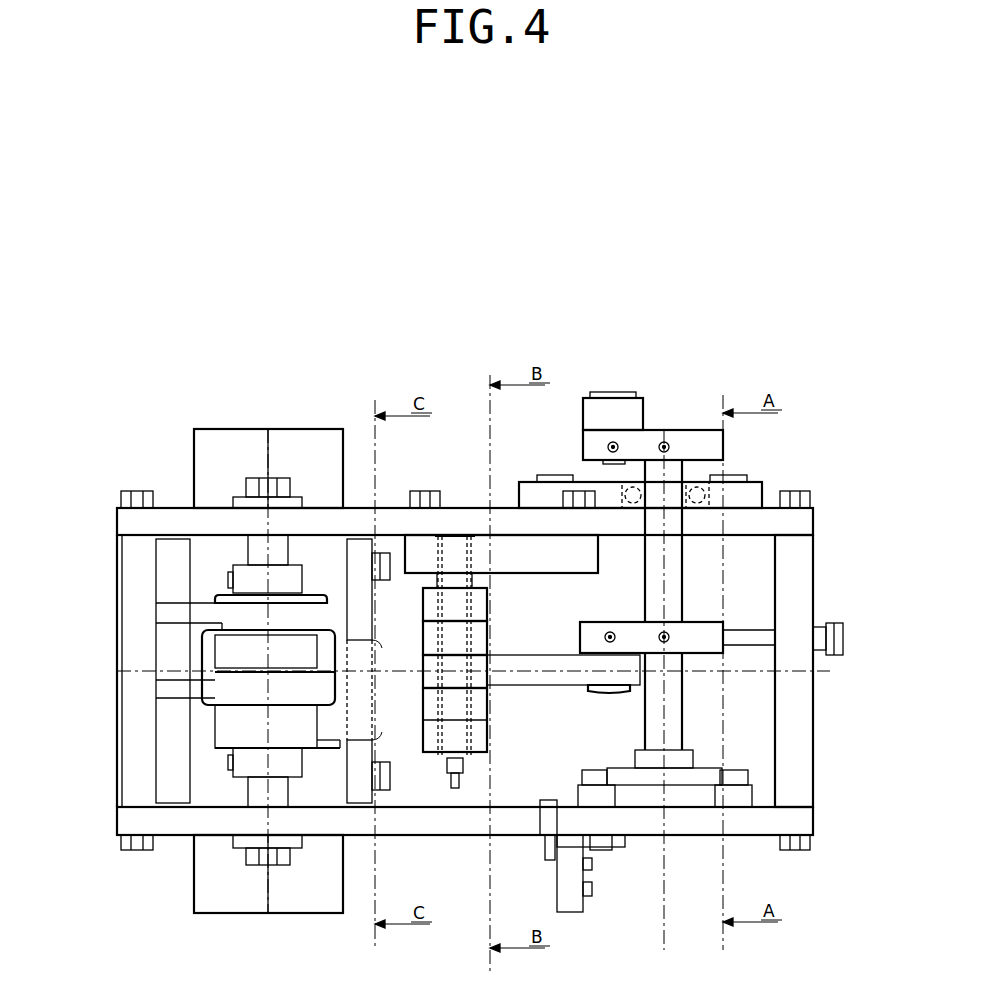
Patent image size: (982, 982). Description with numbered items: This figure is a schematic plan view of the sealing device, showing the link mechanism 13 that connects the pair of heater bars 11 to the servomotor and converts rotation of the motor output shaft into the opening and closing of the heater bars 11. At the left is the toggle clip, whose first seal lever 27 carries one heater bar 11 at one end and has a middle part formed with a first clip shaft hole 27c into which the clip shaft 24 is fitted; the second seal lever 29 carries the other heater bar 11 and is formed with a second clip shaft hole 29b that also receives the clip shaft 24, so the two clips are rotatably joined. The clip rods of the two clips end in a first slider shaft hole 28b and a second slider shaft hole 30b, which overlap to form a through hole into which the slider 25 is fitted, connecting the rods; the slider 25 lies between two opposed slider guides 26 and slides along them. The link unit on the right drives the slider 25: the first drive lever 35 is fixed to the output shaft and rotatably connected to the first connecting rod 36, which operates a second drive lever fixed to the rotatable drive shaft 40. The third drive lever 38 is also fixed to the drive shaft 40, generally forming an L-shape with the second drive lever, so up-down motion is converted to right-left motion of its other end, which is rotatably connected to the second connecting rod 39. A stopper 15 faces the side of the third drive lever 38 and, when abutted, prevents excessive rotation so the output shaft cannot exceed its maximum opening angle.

The heater bar 11 is at (220, 893).
The link mechanism 13 is at (280, 402).
The stopper 15 is at (750, 637).
The clip shaft 24 is at (258, 792).
The slider 25 is at (455, 553).
The slider guide 26 is at (560, 553).
The first seal lever 27 is at (135, 702).
The first clip shaft hole 27c is at (270, 613).
The first slider shaft hole 28b is at (458, 605).
The second seal lever 29 is at (358, 776).
The second clip shaft hole 29b is at (268, 733).
The second slider shaft hole 30b is at (458, 637).
The first drive lever 35 is at (698, 449).
The first connecting rod 36 is at (617, 413).
The third drive lever 38 is at (690, 633).
The second connecting rod 39 is at (570, 682).
The drive shaft 40 is at (675, 732).